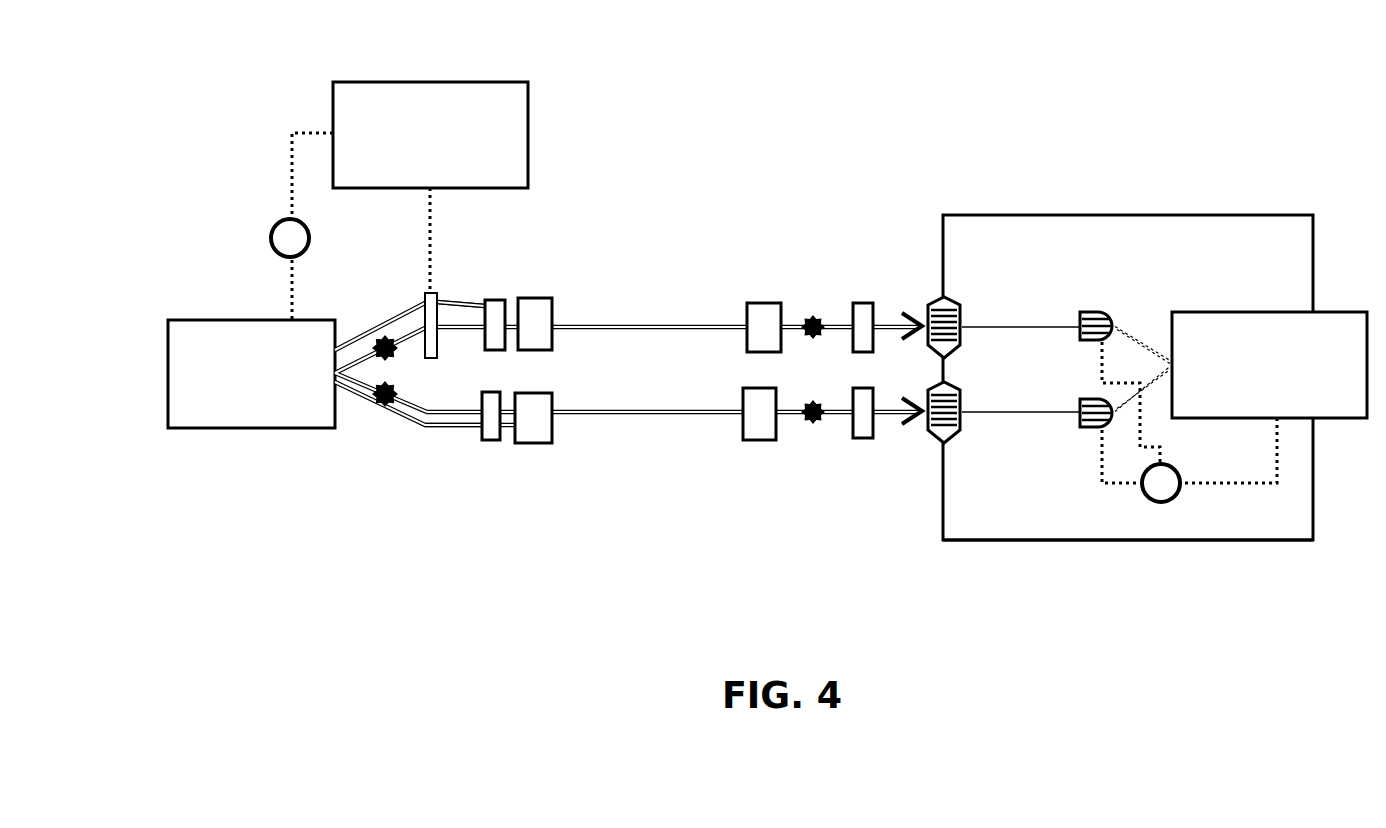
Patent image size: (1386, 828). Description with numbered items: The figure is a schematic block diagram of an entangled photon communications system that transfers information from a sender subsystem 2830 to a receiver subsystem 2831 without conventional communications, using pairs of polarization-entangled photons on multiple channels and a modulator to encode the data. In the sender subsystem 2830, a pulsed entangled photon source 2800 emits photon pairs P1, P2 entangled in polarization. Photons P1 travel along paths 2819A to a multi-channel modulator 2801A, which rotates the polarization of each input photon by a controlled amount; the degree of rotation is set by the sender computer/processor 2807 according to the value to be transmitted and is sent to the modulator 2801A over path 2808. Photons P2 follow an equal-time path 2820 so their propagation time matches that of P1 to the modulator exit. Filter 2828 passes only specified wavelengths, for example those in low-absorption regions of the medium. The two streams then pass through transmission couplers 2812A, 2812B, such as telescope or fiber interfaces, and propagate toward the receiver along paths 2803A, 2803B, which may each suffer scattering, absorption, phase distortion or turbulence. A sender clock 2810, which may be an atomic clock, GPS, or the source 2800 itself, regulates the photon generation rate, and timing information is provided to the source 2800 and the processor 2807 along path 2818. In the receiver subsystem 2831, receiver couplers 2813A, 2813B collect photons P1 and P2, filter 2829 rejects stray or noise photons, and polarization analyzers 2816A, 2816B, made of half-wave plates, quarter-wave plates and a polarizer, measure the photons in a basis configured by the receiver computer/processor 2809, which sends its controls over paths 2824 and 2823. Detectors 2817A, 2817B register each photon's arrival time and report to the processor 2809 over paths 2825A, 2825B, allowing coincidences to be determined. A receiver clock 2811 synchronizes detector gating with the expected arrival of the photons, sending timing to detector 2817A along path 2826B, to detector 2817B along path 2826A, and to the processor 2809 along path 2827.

The sender subsystem 2830 is at (400, 45).
The receiver subsystem 2831 is at (1135, 123).
The pulsed entangled photon source 2800 is at (220, 312).
The computer/processor 2807 is at (430, 135).
The computer/processor 2809 is at (1269, 365).
The path 2818 is at (282, 143).
The clock 2810 is at (267, 226).
The path 2808 is at (440, 233).
The multi-channel modulator 2801A is at (430, 368).
The photon P1 is at (375, 323).
The photon P2 is at (378, 420).
The paths 2819A is at (463, 303).
The path 2820 is at (448, 425).
The filter 2828 is at (508, 283).
The transmission coupler 2812A is at (548, 308).
The transmission coupler 2812B is at (533, 437).
The path 2803A is at (737, 337).
The path 2803B is at (737, 425).
The receiver coupler 2813A is at (763, 307).
The receiver coupler 2813B is at (769, 433).
The filter 2829 is at (868, 292).
The polarization analyzer 2816A is at (963, 297).
The polarization analyzer 2816B is at (965, 445).
The detector 2817A is at (1076, 302).
The detector 2817B is at (1063, 429).
The path 2825A is at (1127, 322).
The path 2825B is at (1160, 393).
The path 2826A is at (1092, 473).
The path 2826B is at (1095, 363).
The clock 2811 is at (1182, 488).
The path 2827 is at (1275, 493).
The path 2824 is at (1051, 206).
The path 2823 is at (1038, 562).